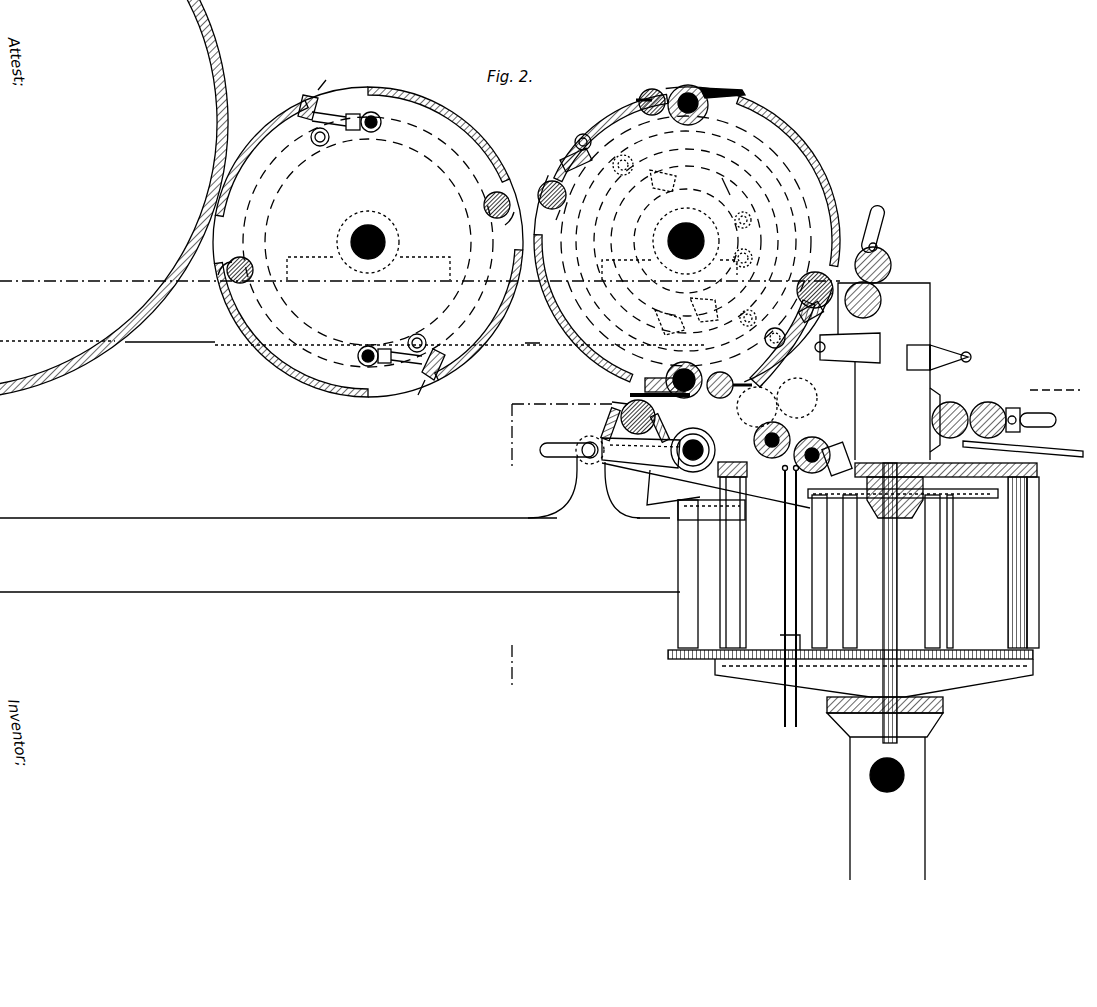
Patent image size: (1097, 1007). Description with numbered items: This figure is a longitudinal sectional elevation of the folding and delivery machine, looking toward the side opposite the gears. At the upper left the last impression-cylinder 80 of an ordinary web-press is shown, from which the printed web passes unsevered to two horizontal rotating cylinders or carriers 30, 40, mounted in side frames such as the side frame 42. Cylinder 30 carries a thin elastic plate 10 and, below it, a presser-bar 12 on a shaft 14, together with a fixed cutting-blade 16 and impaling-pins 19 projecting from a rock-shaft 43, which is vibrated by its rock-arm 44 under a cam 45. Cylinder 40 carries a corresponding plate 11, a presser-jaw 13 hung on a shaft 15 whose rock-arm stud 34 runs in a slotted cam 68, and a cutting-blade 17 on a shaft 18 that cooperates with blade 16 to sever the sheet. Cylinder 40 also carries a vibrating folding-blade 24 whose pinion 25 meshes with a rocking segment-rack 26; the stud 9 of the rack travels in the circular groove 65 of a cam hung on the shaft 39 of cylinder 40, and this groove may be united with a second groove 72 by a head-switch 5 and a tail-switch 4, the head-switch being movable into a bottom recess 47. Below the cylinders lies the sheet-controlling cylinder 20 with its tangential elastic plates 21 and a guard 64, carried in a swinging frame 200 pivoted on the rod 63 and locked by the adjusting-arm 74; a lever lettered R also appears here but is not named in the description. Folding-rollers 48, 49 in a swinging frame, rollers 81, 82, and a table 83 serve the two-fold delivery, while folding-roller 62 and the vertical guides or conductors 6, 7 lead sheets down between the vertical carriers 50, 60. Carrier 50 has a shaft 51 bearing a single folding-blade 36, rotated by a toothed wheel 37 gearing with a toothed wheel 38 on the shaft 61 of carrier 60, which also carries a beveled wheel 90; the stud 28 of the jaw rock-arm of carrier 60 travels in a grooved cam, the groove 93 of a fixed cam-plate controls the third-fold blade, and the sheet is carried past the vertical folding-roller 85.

The last impression-cylinder 80 is at (114, 199).
The rotating cylinder or carrier 30 is at (368, 242).
The rotating cylinder or carrier 40 is at (687, 234).
The shaft of cylinder 40 39 is at (686, 239).
The side frame 42 is at (517, 330).
The rock-shaft 43 is at (378, 118).
The rock-arm 44 is at (338, 140).
The cam 45 is at (303, 150).
The impaling-pins 19 is at (308, 95).
The fixed cutting-blade 16 is at (372, 239).
The shaft 14 is at (242, 282).
The presser-bar 12 is at (216, 278).
The plate 10 is at (224, 290).
The plate 11 is at (548, 172).
The presser-jaw 13 is at (693, 270).
The shaft 15 is at (560, 208).
The cutting-blade 17 is at (730, 88).
The shaft 18 is at (695, 115).
The rocking segment-rack 26 is at (662, 90).
The vibrating folding-blade 24 is at (752, 382).
The stud or roller 34 is at (595, 135).
The friction stud or roller 9 is at (683, 241).
The tail-switch 4 is at (734, 203).
The head-switch 5 is at (675, 324).
The extension or second groove 72 is at (770, 245).
The groove 65 is at (621, 235).
The slotted cam 68 is at (580, 305).
The pinion 25 is at (720, 400).
The stud or roller 28 is at (769, 422).
The folding-roller 62 is at (814, 427).
The rod 63 is at (706, 442).
The small cylinder 20 is at (656, 416).
The guard 64 is at (606, 414).
The elastic plates 21 is at (620, 402).
The adjusting-arm 74 is at (556, 455).
The lever R is at (641, 453).
The swinging frame 200 is at (706, 485).
The single folding-blade 36 is at (711, 574).
The shaft 51 is at (740, 604).
The rotating carrier 50 is at (768, 628).
The vertical guide or conductor 6 is at (784, 547).
The vertical guide or conductor 7 is at (798, 545).
The groove 93 is at (983, 500).
The shaft 61 is at (883, 575).
The rotating carrier 60 is at (940, 595).
The toothed wheel 38 is at (1003, 562).
The vertical folding-roller 85 is at (1033, 615).
The toothed wheel 37 is at (668, 652).
The beveled wheel 90 is at (940, 720).
The bottom recess 47 is at (893, 371).
The folding-roller 49 is at (891, 258).
The folding-roller 48 is at (882, 300).
The roller 81 is at (953, 412).
The roller 82 is at (1025, 410).
The table 83 is at (1058, 450).